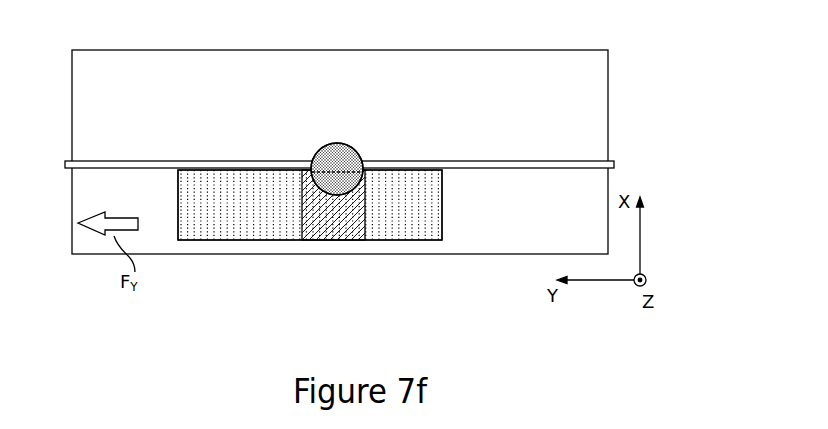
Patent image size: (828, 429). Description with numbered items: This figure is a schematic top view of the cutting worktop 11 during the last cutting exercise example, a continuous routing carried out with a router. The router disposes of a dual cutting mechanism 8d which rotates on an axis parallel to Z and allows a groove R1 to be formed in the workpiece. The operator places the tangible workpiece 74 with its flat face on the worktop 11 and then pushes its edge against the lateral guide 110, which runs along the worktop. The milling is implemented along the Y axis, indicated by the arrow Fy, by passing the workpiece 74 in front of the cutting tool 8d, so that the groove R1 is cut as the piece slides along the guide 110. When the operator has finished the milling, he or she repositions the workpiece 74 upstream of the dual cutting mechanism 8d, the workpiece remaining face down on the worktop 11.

The cutting worktop 11 is at (607, 128).
The tangible workpiece 74 is at (250, 241).
The lateral guide 110 is at (523, 162).
The dual cutting mechanism 8d is at (337, 152).
The groove R1 is at (336, 172).